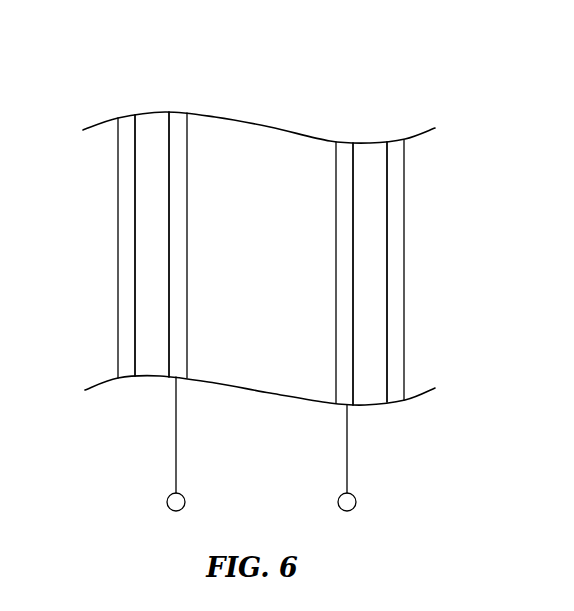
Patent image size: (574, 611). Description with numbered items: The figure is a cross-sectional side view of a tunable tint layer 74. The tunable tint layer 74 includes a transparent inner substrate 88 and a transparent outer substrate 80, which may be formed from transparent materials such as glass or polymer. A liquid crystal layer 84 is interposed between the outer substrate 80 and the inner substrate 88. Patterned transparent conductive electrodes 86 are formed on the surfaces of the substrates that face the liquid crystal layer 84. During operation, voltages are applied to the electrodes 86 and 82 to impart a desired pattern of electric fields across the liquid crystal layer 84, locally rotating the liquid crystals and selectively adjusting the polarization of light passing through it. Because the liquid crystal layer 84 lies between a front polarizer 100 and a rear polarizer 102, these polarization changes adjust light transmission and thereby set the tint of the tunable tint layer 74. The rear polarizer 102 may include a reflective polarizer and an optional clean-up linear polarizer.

The tunable tint layer 74 is at (117, 100).
The transparent outer substrate 80 is at (372, 277).
The electrode 82 is at (343, 228).
The liquid crystal layer 84 is at (254, 378).
The patterned transparent conductive electrodes 86 is at (178, 228).
The transparent inner substrate 88 is at (152, 277).
The front polarizer 100 is at (404, 170).
The rear polarizer 102 is at (118, 170).